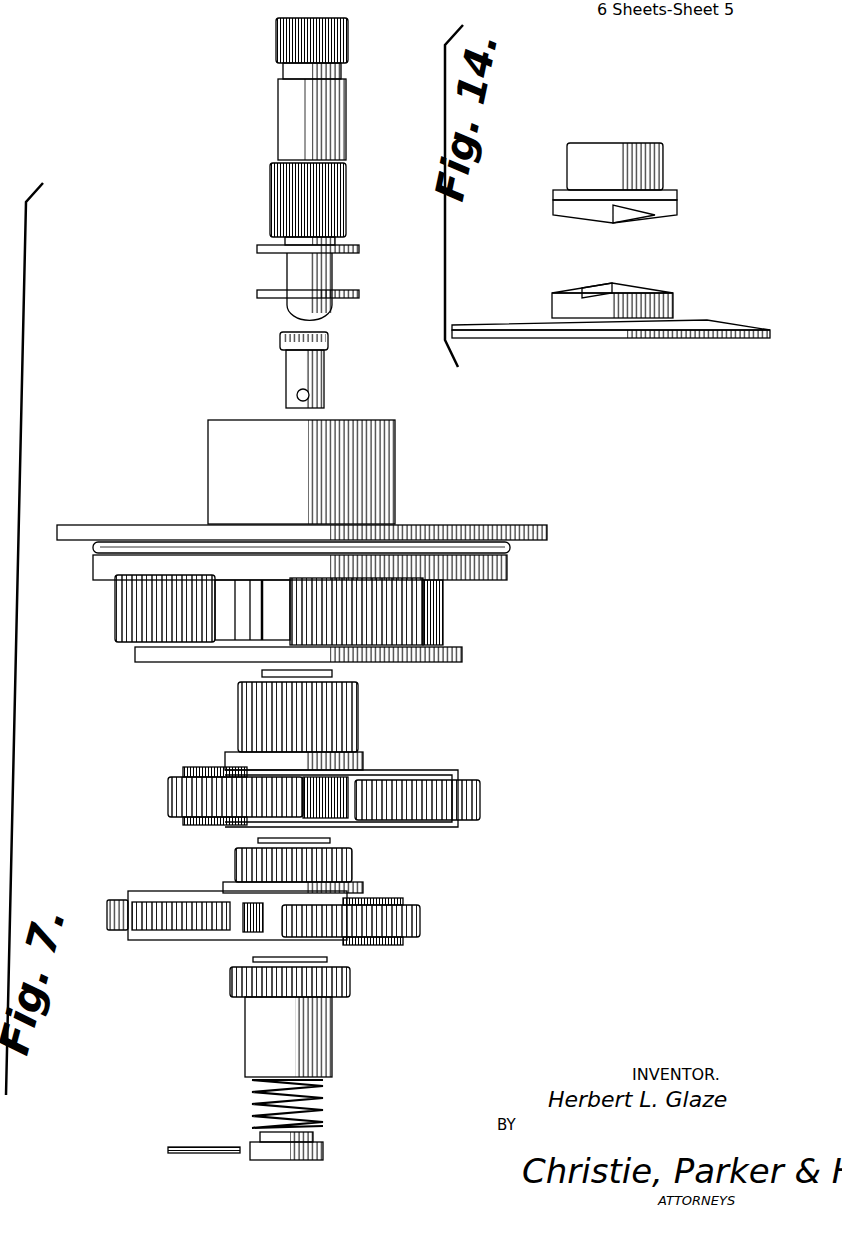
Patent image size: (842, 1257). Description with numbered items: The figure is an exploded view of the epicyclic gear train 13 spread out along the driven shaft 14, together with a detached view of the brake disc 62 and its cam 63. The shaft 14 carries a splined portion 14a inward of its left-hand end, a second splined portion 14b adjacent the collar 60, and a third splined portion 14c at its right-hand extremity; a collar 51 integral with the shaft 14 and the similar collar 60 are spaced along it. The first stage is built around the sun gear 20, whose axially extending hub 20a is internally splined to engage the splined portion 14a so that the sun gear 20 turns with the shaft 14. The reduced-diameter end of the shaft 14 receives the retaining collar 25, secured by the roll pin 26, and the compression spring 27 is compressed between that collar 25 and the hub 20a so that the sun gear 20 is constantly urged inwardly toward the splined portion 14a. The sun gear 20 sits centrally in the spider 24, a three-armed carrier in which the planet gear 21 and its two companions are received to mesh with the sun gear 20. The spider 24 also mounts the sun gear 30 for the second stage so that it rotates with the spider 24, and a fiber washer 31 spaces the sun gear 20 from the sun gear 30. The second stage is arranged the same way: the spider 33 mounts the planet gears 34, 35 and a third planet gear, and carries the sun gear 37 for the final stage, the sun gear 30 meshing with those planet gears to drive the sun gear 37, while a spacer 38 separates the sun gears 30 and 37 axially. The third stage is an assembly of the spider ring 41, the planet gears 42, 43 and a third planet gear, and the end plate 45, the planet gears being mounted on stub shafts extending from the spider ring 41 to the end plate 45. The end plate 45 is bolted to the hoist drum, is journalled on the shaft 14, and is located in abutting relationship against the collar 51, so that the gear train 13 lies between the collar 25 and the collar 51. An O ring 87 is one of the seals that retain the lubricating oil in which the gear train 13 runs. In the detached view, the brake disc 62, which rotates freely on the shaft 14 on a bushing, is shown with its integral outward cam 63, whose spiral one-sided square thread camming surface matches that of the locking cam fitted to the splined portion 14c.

In FIG. 7, the gear train 13 is at (101, 728).
In FIG. 7, the driven shaft 14 is at (303, 130).
In FIG. 14, the driven shaft 14 is at (600, 185).
In FIG. 7, the splined portion 14a is at (328, 338).
In FIG. 7, the splined portion 14b is at (270, 200).
In FIG. 7, the splined portion 14c is at (278, 38).
In FIG. 7, the sun gear 20 is at (350, 982).
In FIG. 7, the hub 20a is at (245, 1035).
In FIG. 7, the planet gear 21 is at (106, 904).
In FIG. 7, the spider 24 is at (161, 898).
In FIG. 7, the retaining collar 25 is at (323, 1150).
In FIG. 7, the roll pin 26 is at (178, 1142).
In FIG. 7, the compression spring 27 is at (252, 1110).
In FIG. 7, the sun gear 30 is at (234, 862).
In FIG. 7, the fiber washer 31 is at (253, 958).
In FIG. 7, the spider 33 is at (423, 768).
In FIG. 7, the planet gear 34 is at (168, 790).
In FIG. 7, the planet gear 35 is at (467, 797).
In FIG. 7, the sun gear 37 is at (238, 712).
In FIG. 7, the spacer 38 is at (330, 840).
In FIG. 7, the spider ring 41 is at (462, 652).
In FIG. 7, the planet gear 42 is at (116, 608).
In FIG. 7, the planet gear 43 is at (395, 607).
In FIG. 7, the end plate 45 is at (540, 540).
In FIG. 7, the collar 51 is at (257, 297).
In FIG. 7, the collar 60 is at (257, 249).
In FIG. 14, the brake disc 62 is at (507, 314).
In FIG. 14, the cam 63 is at (557, 307).
In FIG. 7, the O ring 87 is at (94, 541).